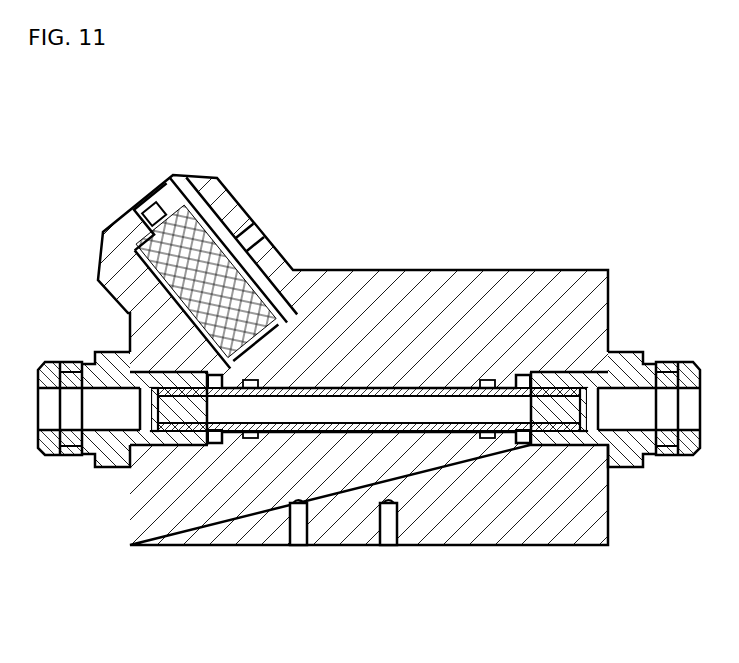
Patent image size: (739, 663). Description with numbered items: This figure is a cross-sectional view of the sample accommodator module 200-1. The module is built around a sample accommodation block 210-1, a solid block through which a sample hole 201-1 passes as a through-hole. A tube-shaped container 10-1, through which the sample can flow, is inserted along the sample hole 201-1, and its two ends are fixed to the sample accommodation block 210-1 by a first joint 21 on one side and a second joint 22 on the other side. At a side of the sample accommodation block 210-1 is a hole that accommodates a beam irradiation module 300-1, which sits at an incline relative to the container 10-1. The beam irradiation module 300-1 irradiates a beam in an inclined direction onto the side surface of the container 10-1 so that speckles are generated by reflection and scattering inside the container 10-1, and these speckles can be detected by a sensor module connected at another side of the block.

The sample accommodator module 200-1 is at (525, 193).
The beam irradiation module 300-1 is at (198, 243).
The sample accommodation block 210-1 is at (232, 527).
The sample hole 201-1 is at (425, 420).
The container 10-1 is at (551, 425).
The first joint 21 is at (628, 453).
The second joint 22 is at (110, 457).